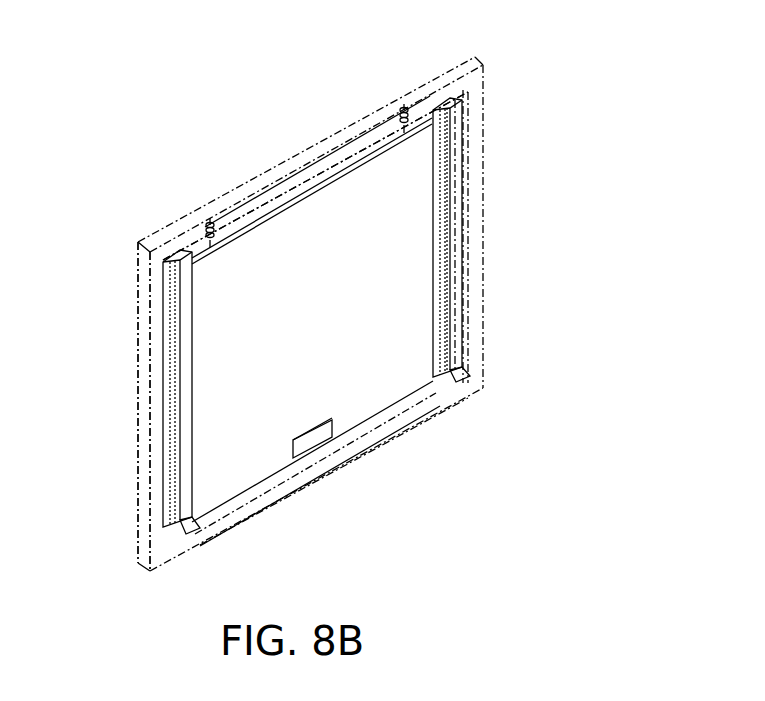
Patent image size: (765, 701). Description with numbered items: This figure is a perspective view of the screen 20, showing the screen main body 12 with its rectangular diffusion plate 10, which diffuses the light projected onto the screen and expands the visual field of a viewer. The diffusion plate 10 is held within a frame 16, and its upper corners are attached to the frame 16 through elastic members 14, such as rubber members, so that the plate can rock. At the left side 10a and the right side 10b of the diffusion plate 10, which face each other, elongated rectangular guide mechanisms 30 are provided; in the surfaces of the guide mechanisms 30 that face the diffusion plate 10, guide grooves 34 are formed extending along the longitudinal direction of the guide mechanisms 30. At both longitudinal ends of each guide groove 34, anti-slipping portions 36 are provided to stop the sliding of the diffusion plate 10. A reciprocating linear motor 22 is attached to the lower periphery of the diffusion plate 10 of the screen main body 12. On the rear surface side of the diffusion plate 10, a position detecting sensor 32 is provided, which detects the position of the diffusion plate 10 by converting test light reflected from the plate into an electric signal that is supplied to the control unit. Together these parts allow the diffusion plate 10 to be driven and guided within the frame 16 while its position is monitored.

The diffusion plate 10 is at (330, 208).
The left side 10a is at (160, 440).
The right side 10b is at (448, 265).
The screen main body 12 is at (289, 196).
The elastic member 14 is at (214, 220).
The frame 16 is at (484, 150).
The screen 20 is at (220, 140).
The linear motor 22 is at (318, 448).
The guide mechanism 30 is at (462, 204).
The position detecting sensor 32 is at (152, 376).
The guide groove 34 is at (205, 512).
The anti-slipping portion 36 is at (182, 256).